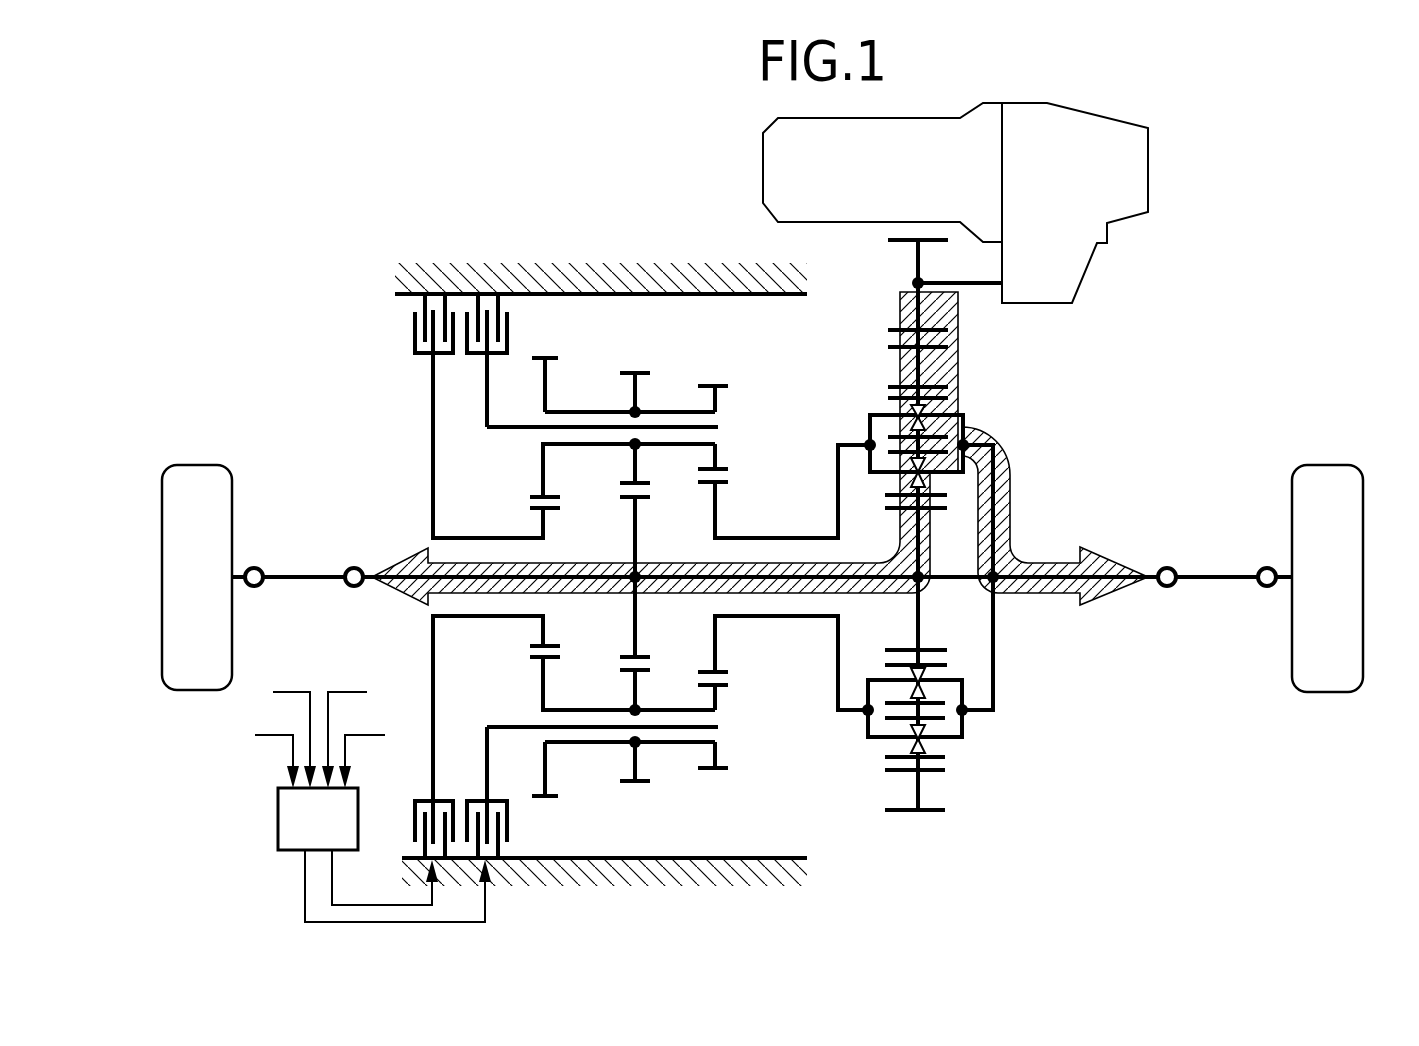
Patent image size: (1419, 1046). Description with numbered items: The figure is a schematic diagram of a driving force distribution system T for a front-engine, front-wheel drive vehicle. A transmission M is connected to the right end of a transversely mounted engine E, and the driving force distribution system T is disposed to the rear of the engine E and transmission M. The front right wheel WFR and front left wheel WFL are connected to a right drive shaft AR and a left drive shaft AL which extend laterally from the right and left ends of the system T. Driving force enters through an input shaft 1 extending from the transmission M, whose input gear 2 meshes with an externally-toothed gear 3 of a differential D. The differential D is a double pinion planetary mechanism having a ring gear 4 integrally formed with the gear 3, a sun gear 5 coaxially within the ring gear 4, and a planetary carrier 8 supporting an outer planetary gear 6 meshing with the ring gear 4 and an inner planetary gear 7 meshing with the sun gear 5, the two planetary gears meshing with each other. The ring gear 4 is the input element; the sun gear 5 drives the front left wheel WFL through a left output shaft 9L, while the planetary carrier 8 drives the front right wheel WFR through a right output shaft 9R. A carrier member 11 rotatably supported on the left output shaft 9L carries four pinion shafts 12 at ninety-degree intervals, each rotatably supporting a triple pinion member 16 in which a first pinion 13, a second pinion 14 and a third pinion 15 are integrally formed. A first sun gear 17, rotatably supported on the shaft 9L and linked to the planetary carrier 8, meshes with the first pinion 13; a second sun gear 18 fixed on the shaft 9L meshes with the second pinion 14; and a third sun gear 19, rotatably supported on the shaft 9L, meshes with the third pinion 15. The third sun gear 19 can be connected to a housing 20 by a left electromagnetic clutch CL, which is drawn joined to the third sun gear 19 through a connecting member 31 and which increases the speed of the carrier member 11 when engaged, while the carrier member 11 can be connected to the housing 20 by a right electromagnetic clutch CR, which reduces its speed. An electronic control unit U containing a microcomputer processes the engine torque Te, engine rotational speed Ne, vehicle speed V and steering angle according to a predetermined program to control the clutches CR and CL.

The input shaft 1 is at (943, 283).
The input gear 2 is at (888, 241).
The externally-toothed gear 3 is at (888, 346).
The ring gear 4 is at (888, 386).
The sun gear 5 is at (932, 509).
The outer planetary gear 6 is at (888, 399).
The inner planetary gear 7 is at (895, 494).
The planetary carrier 8 is at (1008, 466).
The left output shaft 9L is at (420, 565).
The right output shaft 9R is at (1100, 560).
The carrier member 11 is at (478, 396).
The pinion shaft 12 is at (548, 425).
The first pinion 13 is at (712, 385).
The second pinion 14 is at (635, 372).
The third pinion 15 is at (545, 357).
The triple pinion member 16 is at (590, 400).
The first sun gear 17 is at (728, 490).
The second sun gear 18 is at (645, 503).
The third sun gear 19 is at (555, 512).
The housing 20 is at (620, 285).
The clutch output shaft 31 is at (468, 538).
The driving force distribution system T is at (553, 243).
The left electromagnetic clutch CL is at (410, 333).
The right electromagnetic clutch CR is at (488, 288).
The differential D is at (992, 412).
The engine E is at (851, 179).
The transmission M is at (1052, 184).
The electronic control unit U is at (304, 837).
The left drive shaft AL is at (300, 577).
The right drive shaft AR is at (1212, 577).
The front left wheel WFL is at (197, 465).
The front right wheel WFR is at (1325, 465).
The engine rotational speed Ne is at (294, 723).
The vehicle speed V is at (344, 721).
The engine torque Te is at (273, 744).